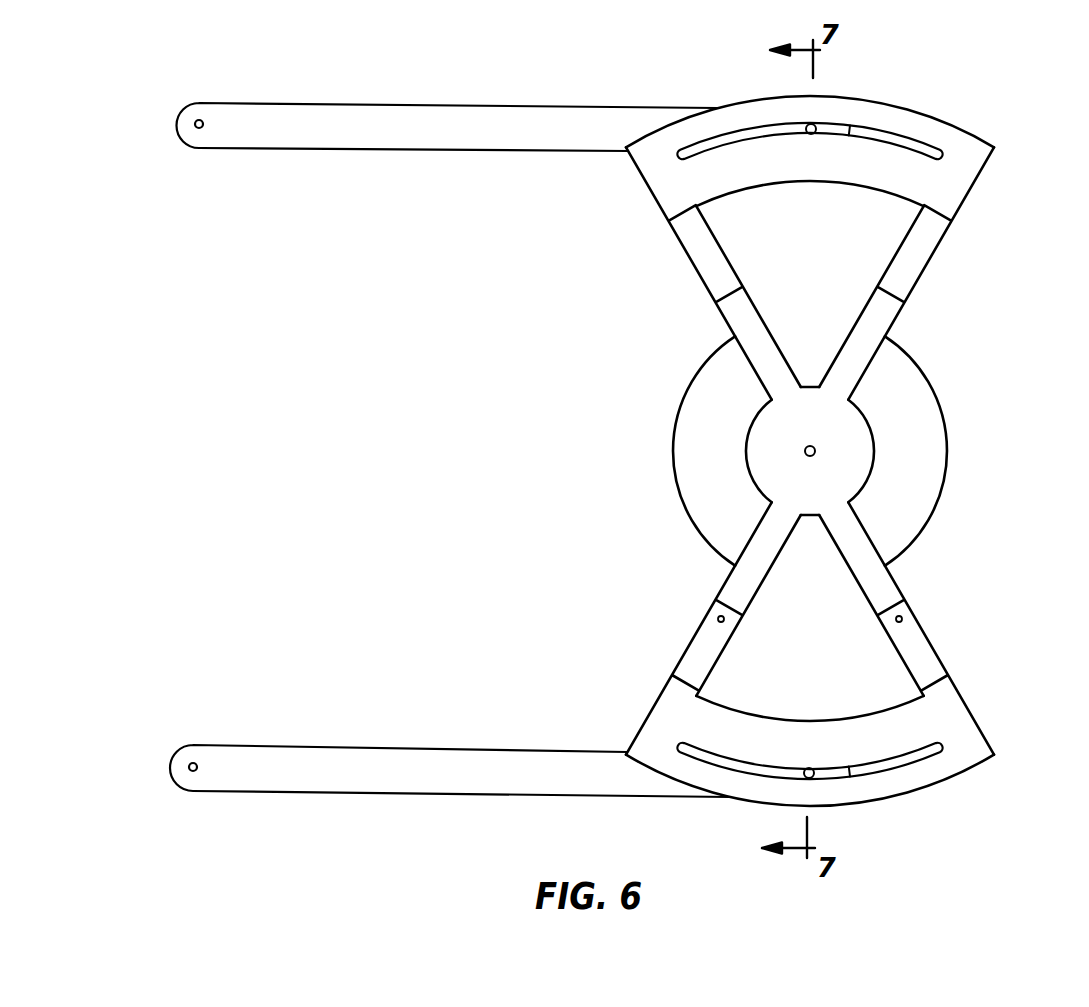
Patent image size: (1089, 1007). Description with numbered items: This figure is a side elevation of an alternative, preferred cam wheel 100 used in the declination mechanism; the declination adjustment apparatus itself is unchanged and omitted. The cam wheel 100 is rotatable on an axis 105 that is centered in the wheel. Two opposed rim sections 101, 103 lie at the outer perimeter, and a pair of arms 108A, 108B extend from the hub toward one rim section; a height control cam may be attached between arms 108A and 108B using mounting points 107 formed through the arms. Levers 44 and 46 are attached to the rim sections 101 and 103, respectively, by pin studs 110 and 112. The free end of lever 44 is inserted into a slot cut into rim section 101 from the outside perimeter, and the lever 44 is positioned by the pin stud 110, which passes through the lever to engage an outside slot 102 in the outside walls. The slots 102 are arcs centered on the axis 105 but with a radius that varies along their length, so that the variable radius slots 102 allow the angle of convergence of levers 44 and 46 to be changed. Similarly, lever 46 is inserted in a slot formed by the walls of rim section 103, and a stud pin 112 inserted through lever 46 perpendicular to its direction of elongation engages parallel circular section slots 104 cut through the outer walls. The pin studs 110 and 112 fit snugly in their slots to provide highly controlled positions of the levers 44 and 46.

The lever 44 is at (532, 103).
The lever 46 is at (423, 748).
The cam wheel 100 is at (895, 323).
The rim section 101 is at (977, 153).
The outside slot 102 is at (904, 144).
The rim section 103 is at (972, 743).
The circular section slots 104 is at (923, 758).
The axis 105 is at (817, 450).
The mounting points 107 is at (716, 619).
The arm 108A is at (751, 600).
The arm 108B is at (898, 585).
The pin stud 110 is at (815, 135).
The stud pin 112 is at (808, 767).